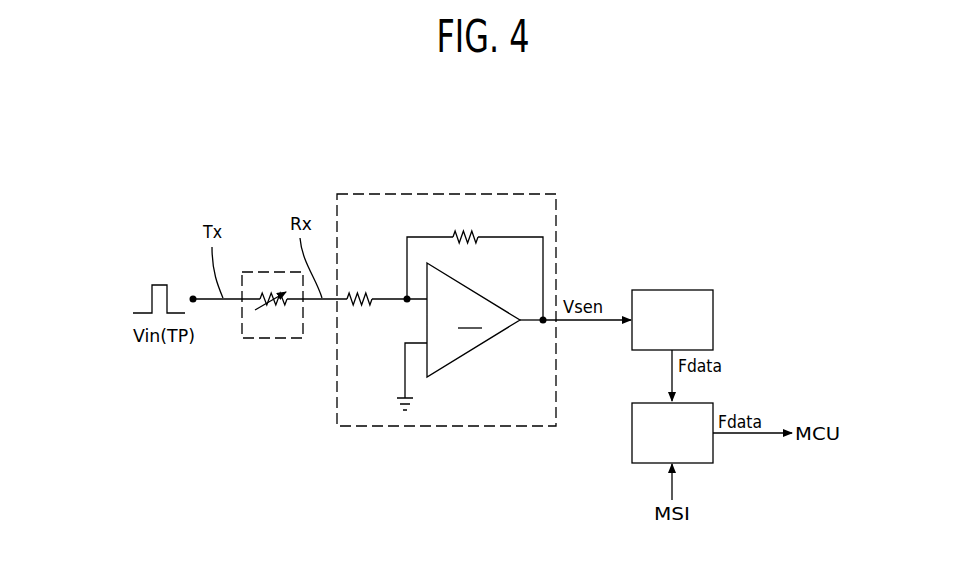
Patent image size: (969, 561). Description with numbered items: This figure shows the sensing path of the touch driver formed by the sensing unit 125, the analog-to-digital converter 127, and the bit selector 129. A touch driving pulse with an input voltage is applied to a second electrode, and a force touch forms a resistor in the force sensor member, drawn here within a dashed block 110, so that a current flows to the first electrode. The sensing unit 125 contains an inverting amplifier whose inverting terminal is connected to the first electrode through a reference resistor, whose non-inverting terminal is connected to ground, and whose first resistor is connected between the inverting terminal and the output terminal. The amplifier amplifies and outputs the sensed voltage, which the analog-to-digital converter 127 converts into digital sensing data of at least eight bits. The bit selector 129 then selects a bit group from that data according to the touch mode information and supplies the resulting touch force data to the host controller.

The touch sensor (force-sensitive resistor Rforce) 110 is at (273, 338).
The sensing unit 125 is at (337, 194).
The analog-to-digital converter 127 is at (687, 335).
The bit selector 129 is at (687, 447).